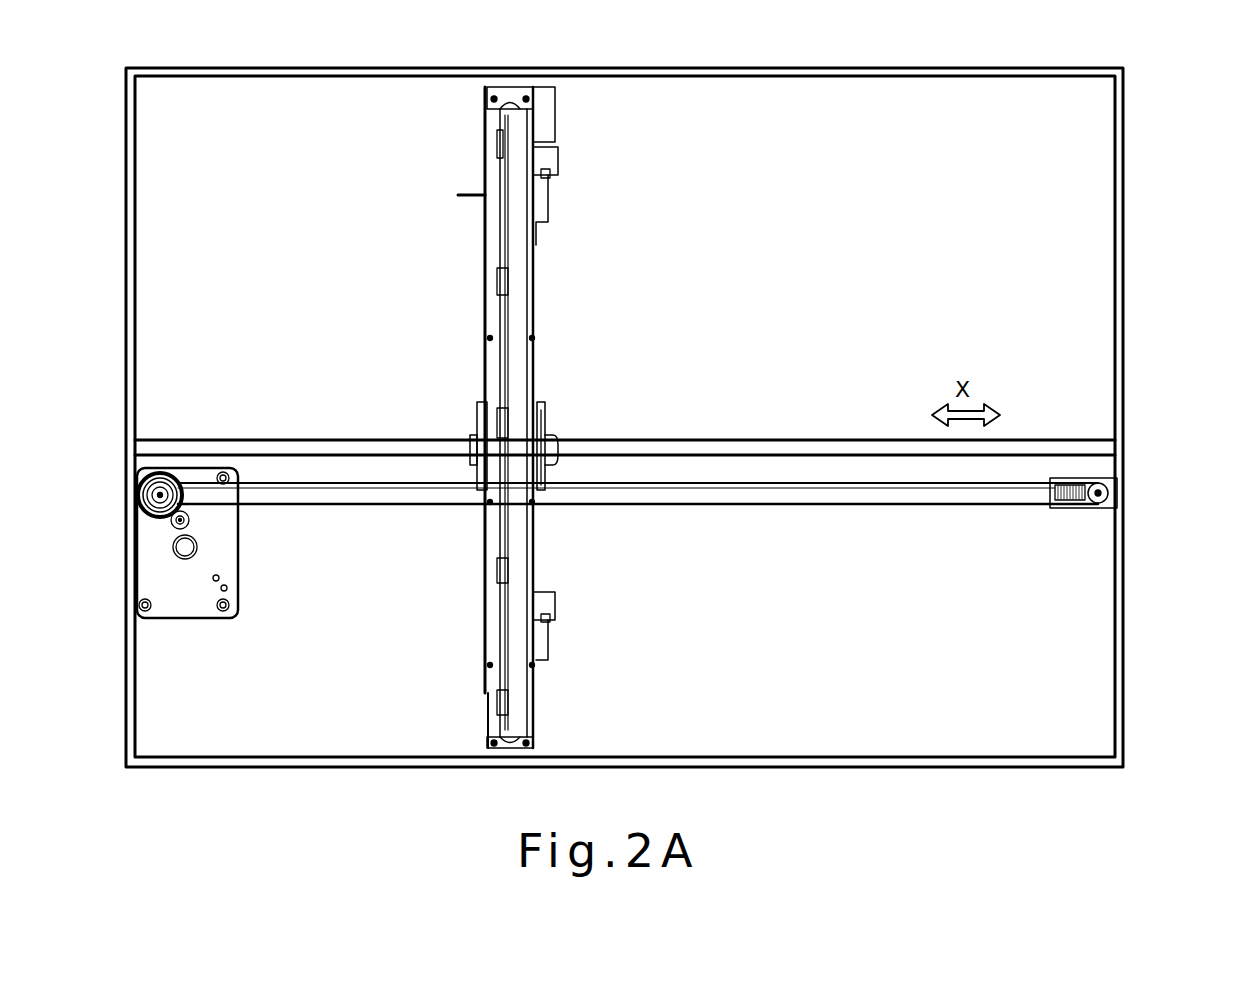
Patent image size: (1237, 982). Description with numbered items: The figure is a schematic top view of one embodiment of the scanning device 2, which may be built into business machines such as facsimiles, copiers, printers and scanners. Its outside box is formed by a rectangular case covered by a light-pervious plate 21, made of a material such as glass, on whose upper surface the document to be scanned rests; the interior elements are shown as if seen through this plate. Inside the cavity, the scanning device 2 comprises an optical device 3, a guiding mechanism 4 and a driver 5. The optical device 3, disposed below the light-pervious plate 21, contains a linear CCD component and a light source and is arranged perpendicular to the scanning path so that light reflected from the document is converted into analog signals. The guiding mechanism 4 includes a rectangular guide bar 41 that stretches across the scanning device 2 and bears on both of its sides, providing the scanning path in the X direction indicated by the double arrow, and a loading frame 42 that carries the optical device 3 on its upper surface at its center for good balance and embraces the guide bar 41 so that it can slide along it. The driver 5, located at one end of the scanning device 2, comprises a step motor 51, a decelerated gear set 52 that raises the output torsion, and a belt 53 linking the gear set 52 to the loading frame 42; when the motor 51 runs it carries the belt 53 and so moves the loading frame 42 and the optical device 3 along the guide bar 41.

The scanning device 2 is at (1184, 95).
The light-pervious plate 21 is at (1100, 258).
The optical device 3 is at (540, 203).
The guiding mechanism 4 is at (504, 419).
The guide bar 41 is at (333, 452).
The loading frame 42 is at (545, 415).
The driver 5 is at (213, 567).
The motor 51 is at (225, 562).
The decelerated gear set 52 is at (192, 512).
The belt 53 is at (395, 508).